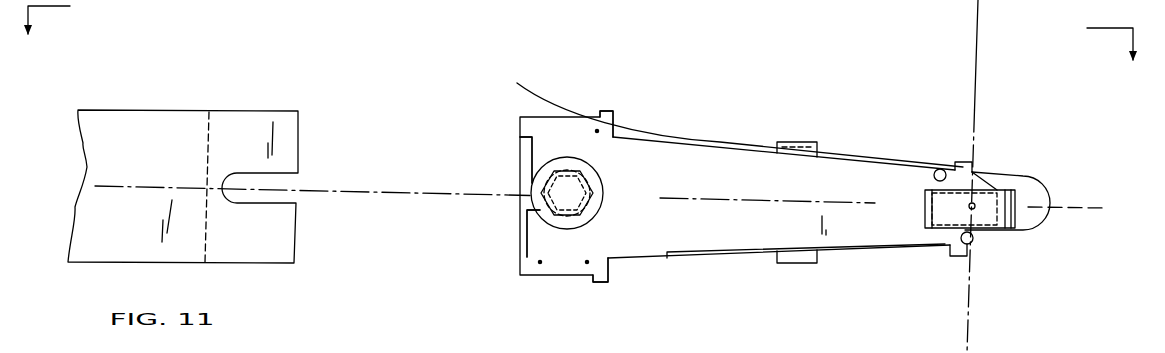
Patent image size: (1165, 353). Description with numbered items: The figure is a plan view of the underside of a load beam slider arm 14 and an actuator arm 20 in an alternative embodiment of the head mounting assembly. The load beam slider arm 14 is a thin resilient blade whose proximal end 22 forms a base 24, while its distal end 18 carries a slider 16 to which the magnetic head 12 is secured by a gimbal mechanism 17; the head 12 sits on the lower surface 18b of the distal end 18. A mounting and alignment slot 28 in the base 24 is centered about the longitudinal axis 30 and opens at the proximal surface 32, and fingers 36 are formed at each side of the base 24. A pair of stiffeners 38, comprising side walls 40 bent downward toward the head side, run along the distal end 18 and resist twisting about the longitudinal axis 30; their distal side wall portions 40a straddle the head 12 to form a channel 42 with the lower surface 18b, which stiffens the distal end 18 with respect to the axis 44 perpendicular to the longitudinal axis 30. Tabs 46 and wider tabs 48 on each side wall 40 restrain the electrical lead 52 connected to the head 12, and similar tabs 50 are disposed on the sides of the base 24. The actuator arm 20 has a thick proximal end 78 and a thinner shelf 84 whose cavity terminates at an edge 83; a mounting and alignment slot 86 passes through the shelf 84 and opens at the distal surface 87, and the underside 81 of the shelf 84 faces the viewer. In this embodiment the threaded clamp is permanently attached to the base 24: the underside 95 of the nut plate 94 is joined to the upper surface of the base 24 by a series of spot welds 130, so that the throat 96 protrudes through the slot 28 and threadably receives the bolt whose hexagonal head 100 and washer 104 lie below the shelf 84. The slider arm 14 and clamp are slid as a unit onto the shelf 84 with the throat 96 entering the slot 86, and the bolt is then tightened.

The magnetic head 12 is at (927, 225).
The load beam slider arm 14 is at (867, 101).
The slider 16 is at (947, 209).
The gimbal mechanism 17 is at (969, 206).
The distal end 18 is at (965, 133).
The lower surface 18b is at (818, 191).
The actuator arm 20 is at (203, 163).
The proximal end 22 is at (740, 167).
The base 24 is at (550, 201).
The mounting and alignment slot 28 is at (603, 176).
The longitudinal axis 30 is at (373, 189).
The proximal surface 32 is at (507, 274).
The fingers 36 is at (520, 122).
The stiffeners 38 is at (750, 160).
The side walls 40 is at (718, 150).
The distal side wall portions 40a is at (950, 165).
The channel 42 is at (917, 183).
The axis 44 is at (980, 17).
The tabs 46 is at (972, 162).
The tabs 48 is at (803, 142).
The tabs 50 is at (612, 110).
The electrical lead 52 is at (1043, 218).
The proximal end 78 is at (100, 110).
The underside 81 is at (133, 214).
The edge 83 is at (208, 224).
The shelf 84 is at (260, 263).
The mounting and alignment slot 86 is at (292, 181).
The distal surface 87 is at (295, 242).
The plate 94 is at (517, 219).
The underside 95 is at (520, 177).
The throat 96 is at (570, 177).
The bolt head 100 is at (572, 218).
The washer 104 is at (598, 213).
The spot welds 130 is at (542, 131).